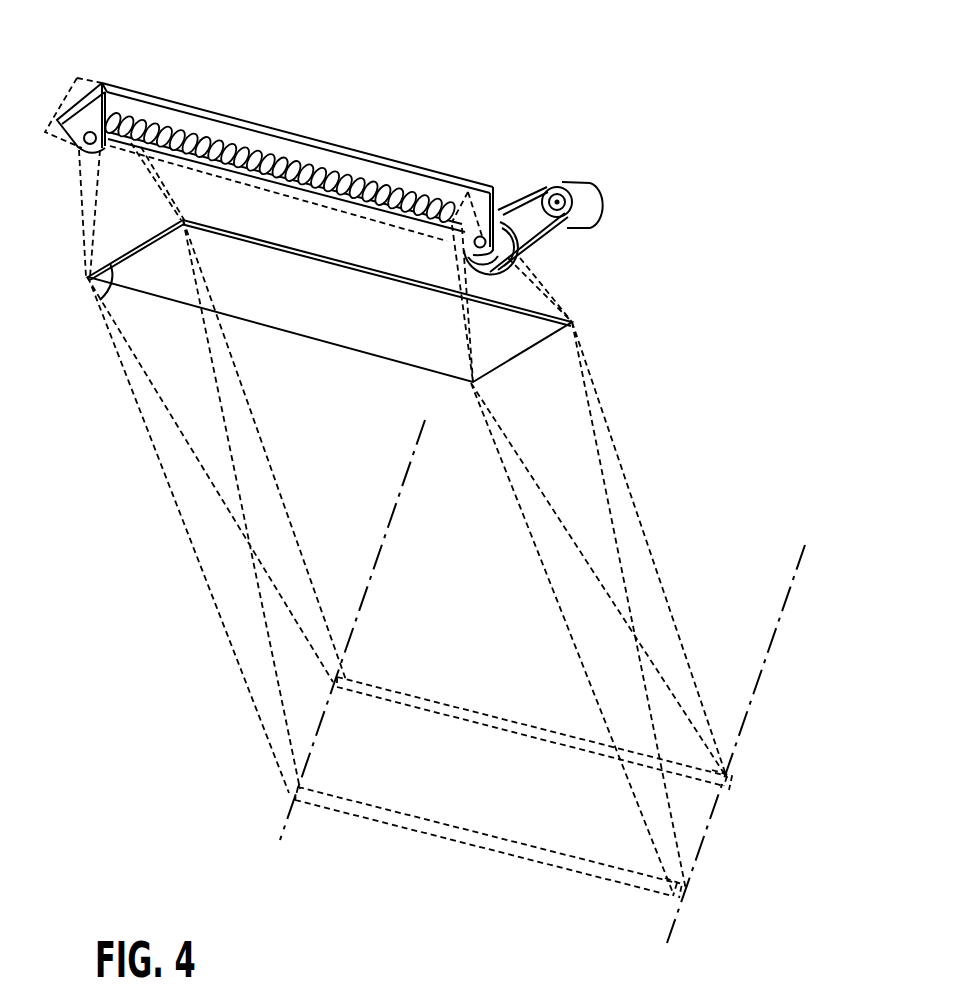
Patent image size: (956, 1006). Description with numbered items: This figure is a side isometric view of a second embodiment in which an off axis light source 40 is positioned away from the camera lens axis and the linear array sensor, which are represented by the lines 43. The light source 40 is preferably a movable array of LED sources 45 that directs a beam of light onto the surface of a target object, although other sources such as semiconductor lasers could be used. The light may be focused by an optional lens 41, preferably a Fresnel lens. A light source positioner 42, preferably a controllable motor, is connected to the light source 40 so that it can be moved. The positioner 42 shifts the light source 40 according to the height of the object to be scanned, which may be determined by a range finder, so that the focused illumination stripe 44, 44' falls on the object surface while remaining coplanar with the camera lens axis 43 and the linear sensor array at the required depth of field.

The off axis light source 40 is at (146, 108).
The lens 41 is at (108, 278).
The light source positioner 42 is at (606, 210).
The camera lens axis 43 is at (410, 470).
The focused illumination stripe 44 is at (554, 771).
The focused illumination stripe 44' is at (512, 884).
The movable array of LED sources 45 is at (433, 213).